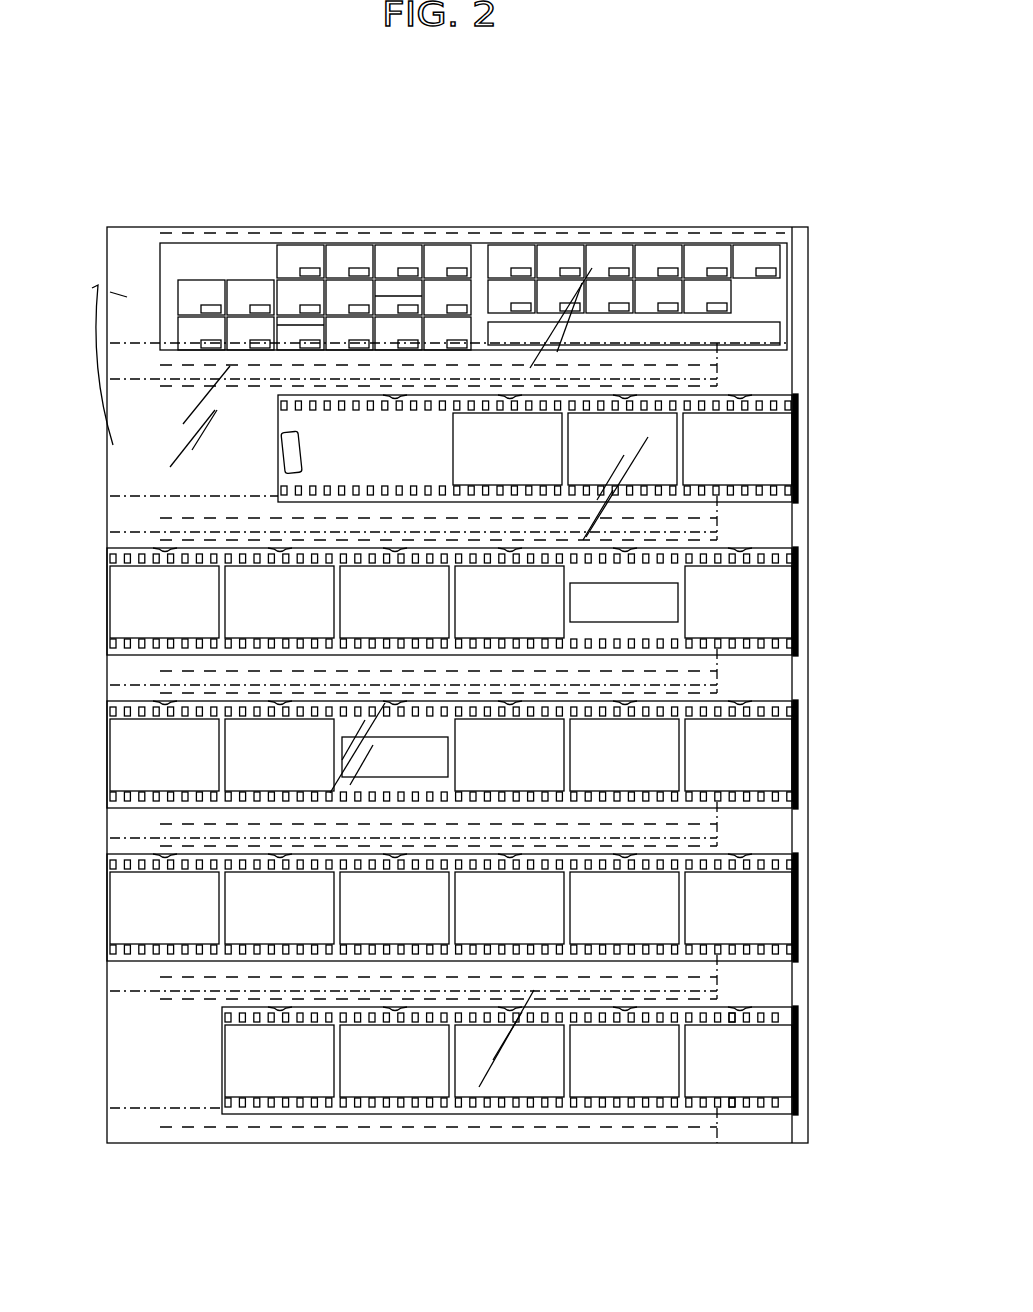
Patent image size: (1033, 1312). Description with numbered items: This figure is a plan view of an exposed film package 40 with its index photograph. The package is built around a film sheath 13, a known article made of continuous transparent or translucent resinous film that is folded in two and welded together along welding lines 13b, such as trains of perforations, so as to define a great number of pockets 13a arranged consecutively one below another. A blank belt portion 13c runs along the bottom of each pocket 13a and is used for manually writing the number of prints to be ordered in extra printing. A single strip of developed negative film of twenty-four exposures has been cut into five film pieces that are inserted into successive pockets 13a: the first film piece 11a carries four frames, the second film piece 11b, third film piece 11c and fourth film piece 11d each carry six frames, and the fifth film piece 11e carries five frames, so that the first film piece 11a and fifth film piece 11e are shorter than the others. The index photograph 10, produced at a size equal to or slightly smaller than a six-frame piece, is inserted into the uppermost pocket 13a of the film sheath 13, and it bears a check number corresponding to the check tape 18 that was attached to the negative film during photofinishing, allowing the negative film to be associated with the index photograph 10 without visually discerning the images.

The exposed film package 40 is at (508, 165).
The index photograph 10 is at (812, 280).
The first film piece 11a is at (800, 436).
The second film piece 11b is at (800, 588).
The third film piece 11c is at (800, 741).
The fourth film piece 11d is at (800, 893).
The fifth film piece 11e is at (797, 1052).
The film sheath 13 is at (494, 223).
The pocket 13a is at (85, 353).
The welding line 13b is at (180, 226).
The blank belt portion 13c is at (720, 524).
The check tape 18 is at (283, 457).